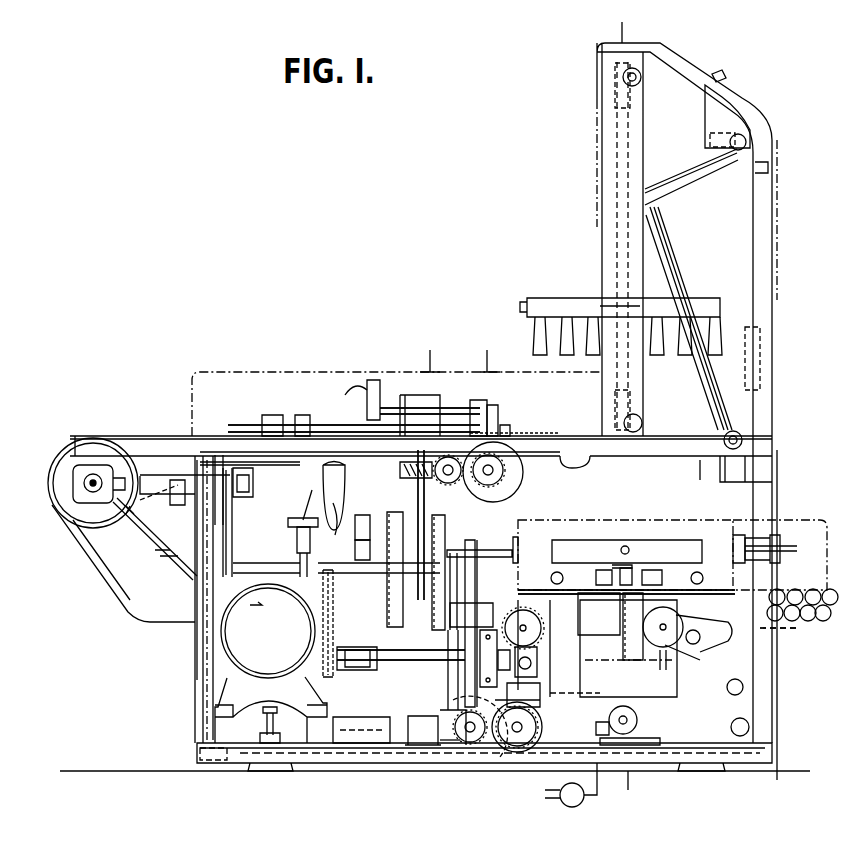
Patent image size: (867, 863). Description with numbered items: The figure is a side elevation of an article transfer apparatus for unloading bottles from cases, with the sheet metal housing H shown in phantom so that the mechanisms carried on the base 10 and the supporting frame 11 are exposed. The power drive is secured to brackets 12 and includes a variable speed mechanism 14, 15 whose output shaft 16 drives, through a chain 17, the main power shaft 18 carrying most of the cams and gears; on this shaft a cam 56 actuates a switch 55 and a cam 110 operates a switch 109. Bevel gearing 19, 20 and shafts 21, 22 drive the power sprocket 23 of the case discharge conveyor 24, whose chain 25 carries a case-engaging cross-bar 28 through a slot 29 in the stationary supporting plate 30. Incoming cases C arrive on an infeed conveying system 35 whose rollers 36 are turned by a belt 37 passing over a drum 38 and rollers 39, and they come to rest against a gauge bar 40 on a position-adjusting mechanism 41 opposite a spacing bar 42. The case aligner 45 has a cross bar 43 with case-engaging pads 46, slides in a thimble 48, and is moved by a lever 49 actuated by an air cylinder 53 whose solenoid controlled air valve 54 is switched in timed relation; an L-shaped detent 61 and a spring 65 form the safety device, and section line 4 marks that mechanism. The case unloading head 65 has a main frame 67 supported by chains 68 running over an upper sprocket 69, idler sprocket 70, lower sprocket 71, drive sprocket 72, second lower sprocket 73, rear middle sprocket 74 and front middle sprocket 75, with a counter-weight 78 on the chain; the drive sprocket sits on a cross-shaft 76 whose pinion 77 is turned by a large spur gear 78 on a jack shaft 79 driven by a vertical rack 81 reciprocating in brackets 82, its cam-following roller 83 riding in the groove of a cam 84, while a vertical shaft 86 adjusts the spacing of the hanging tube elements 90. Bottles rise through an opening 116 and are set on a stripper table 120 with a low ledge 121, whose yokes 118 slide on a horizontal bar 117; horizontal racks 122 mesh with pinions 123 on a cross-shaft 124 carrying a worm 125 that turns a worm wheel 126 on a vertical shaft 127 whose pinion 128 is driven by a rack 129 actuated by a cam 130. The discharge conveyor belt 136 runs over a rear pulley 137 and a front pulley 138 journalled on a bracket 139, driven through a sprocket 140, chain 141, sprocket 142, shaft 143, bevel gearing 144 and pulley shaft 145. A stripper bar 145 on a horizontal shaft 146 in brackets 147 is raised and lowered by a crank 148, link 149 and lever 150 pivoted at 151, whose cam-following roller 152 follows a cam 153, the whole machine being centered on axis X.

The base 10 is at (772, 752).
The supporting frame 11 is at (754, 238).
The brackets 12 is at (380, 782).
The variable speed mechanism 14 is at (225, 628).
The variable speed mechanism 15 is at (320, 623).
The output shaft 16 is at (405, 650).
The chain 17 is at (334, 625).
The main power shaft 18 is at (266, 562).
The bevel gearing 19 is at (540, 690).
The bevel gearing 20 is at (545, 670).
The shaft 21 is at (537, 662).
The shaft 22 is at (589, 648).
The power sprocket 23 is at (650, 660).
The case discharge conveyor 24 is at (626, 662).
The chain 25 is at (626, 592).
The case-engaging cross-bar 28 is at (660, 570).
The slot 29 is at (630, 570).
The stationary horizontal supporting plate 30 is at (566, 590).
The infeed conveying system 35 is at (797, 582).
The rollers 36 is at (705, 580).
The belt 37 is at (700, 645).
The drum 38 is at (680, 655).
The rollers 39 is at (795, 624).
The gauge bar 40 is at (519, 540).
The position-adjusting mechanism 41 is at (500, 545).
The spacing bar 42 is at (742, 538).
The cross bar 43 is at (568, 545).
The case aligner 45 is at (604, 535).
The case-engaging pads 46 is at (700, 570).
The thimble 48 is at (628, 546).
The lever 49 is at (605, 570).
The air cylinder 53 is at (638, 718).
The solenoid controlled air valve 54 is at (574, 806).
The switch 55 is at (535, 800).
The cam 56 is at (275, 605).
The L-shaped detent 61 is at (782, 540).
The case unloading head 65 is at (556, 236).
The main frame 67 is at (557, 298).
The chains 68 is at (700, 738).
The upper sprocket 69 is at (641, 85).
The idler sprocket 70 is at (747, 142).
The lower sprocket 71 is at (750, 727).
The drive sprocket 72 is at (545, 727).
The second lower sprocket 73 is at (744, 688).
The rear middle sprocket 74 is at (745, 445).
The front middle sprocket 75 is at (642, 423).
The cross-shaft 76 is at (525, 728).
The pinion 77 is at (512, 750).
The large spur gear 78 is at (490, 755).
The jack shaft 79 is at (470, 735).
The vertical rack 81 is at (455, 690).
The brackets 82 is at (425, 716).
The cam-following roller 83 is at (430, 648).
The cam 84 is at (435, 550).
The vertical shaft 86 is at (455, 745).
The hangers 90 is at (527, 343).
The switch 109 is at (296, 528).
The cam 110 is at (300, 556).
The opening 116 is at (598, 436).
The horizontal bar 117 is at (570, 436).
The yokes 118 is at (510, 428).
The stripper table 120 is at (354, 416).
The low ledge 121 is at (545, 436).
The horizontal racks 122 is at (242, 428).
The pinions 123 is at (508, 487).
The horizontal cross-shaft 124 is at (488, 458).
The worm 125 is at (447, 480).
The worm wheel 126 is at (400, 476).
The vertical shaft 127 is at (440, 512).
The pinion 128 is at (465, 555).
The rack 129 is at (400, 590).
The cam 130 is at (418, 520).
The belt 136 is at (150, 498).
The rear pulley 137 is at (515, 472).
The front pulley 138 is at (98, 462).
The bracket 139 is at (110, 570).
The sprocket 140 is at (220, 603).
The chain 141 is at (245, 533).
The sprocket 142 is at (253, 470).
The shaft 143 is at (170, 478).
The bevel gearing 144 is at (88, 470).
The stripper bar 145 is at (508, 402).
The horizontal shaft 146 is at (448, 408).
The brackets 147 is at (475, 400).
The crank 148 is at (376, 390).
The link 149 is at (362, 392).
The lever 150 is at (336, 496).
The pivot 151 is at (336, 518).
The cam-following roller 152 is at (370, 526).
The cam 153 is at (372, 549).
The section line 4 is at (801, 494).
The cases C is at (823, 522).
The sheet metal housing H is at (777, 278).
The axis X— X is at (624, 407).